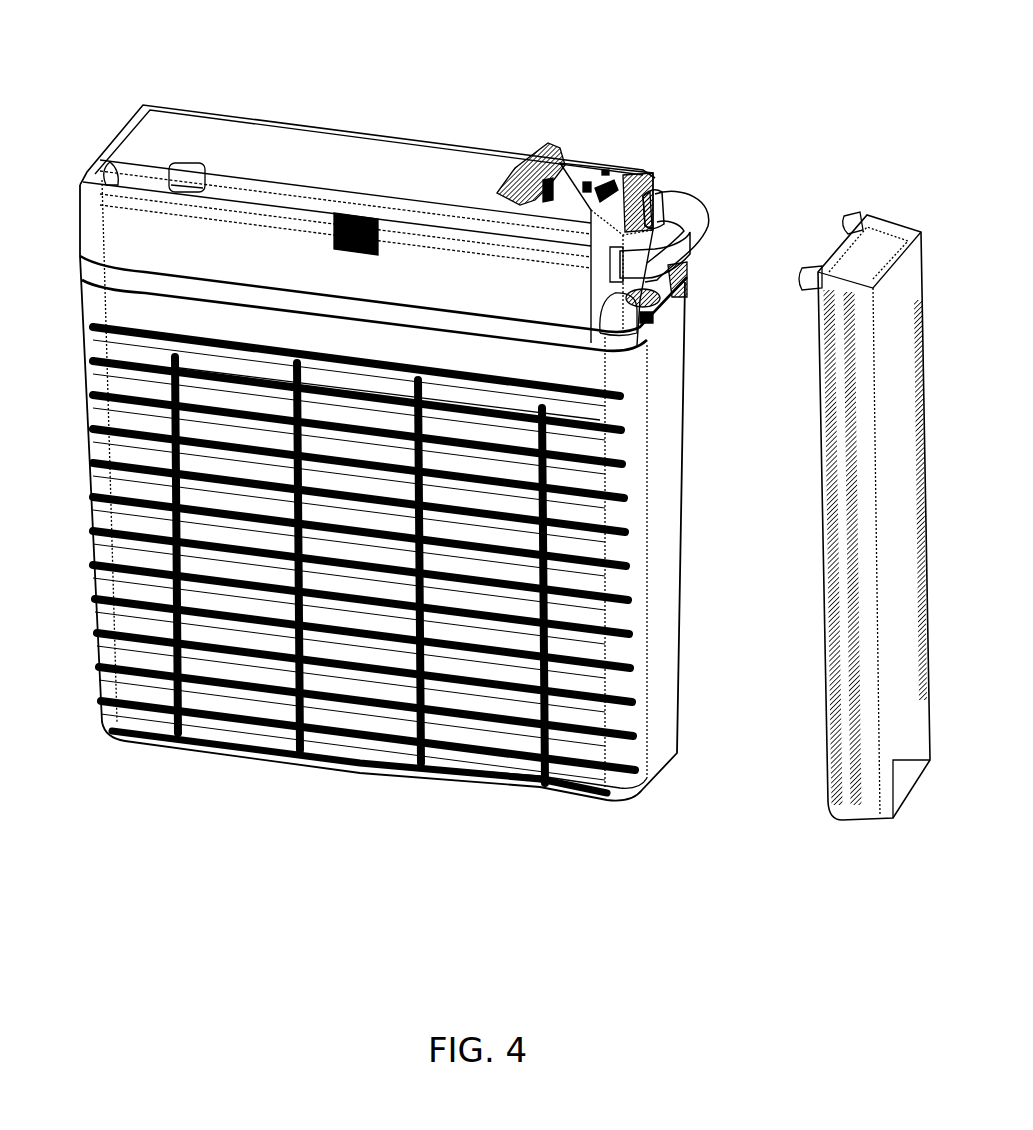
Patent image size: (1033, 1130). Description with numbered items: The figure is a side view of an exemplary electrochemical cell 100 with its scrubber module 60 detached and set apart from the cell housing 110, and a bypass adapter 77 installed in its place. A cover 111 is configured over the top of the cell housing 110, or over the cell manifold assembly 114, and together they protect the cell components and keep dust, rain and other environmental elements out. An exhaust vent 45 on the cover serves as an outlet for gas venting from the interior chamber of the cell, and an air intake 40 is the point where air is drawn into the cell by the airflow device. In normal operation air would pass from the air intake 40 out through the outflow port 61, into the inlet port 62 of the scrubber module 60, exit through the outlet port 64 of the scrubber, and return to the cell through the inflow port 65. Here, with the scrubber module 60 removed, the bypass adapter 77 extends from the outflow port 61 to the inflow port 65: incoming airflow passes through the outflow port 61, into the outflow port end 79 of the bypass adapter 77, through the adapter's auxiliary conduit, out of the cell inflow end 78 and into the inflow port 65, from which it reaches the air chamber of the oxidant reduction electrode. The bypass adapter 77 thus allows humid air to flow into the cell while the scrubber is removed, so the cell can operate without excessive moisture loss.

The electrochemical cell 100 is at (322, 96).
The cell manifold assembly 114 is at (127, 225).
The cover 111 is at (465, 160).
The exhaust vent 45 is at (178, 164).
The air intake 40 is at (334, 236).
The cell housing 110 is at (598, 737).
The outflow port 61 is at (600, 273).
The inflow port 65 is at (654, 200).
The cell inflow end 78 is at (700, 213).
The bypass adapter 77 is at (690, 244).
The outflow port end 79 is at (683, 325).
The scrubber module 60 is at (891, 244).
The inlet port 62 is at (802, 268).
The outlet port 64 is at (858, 214).